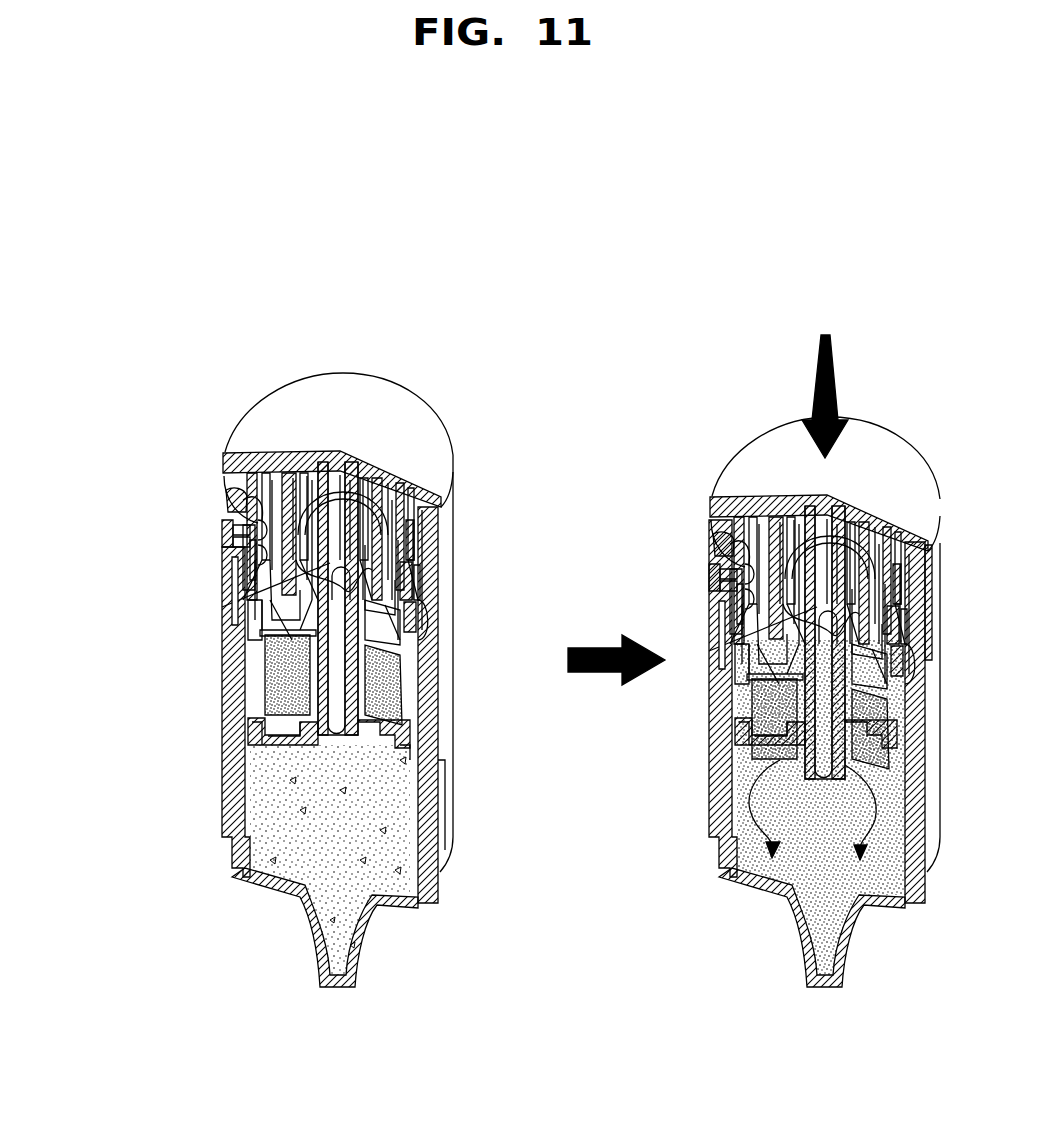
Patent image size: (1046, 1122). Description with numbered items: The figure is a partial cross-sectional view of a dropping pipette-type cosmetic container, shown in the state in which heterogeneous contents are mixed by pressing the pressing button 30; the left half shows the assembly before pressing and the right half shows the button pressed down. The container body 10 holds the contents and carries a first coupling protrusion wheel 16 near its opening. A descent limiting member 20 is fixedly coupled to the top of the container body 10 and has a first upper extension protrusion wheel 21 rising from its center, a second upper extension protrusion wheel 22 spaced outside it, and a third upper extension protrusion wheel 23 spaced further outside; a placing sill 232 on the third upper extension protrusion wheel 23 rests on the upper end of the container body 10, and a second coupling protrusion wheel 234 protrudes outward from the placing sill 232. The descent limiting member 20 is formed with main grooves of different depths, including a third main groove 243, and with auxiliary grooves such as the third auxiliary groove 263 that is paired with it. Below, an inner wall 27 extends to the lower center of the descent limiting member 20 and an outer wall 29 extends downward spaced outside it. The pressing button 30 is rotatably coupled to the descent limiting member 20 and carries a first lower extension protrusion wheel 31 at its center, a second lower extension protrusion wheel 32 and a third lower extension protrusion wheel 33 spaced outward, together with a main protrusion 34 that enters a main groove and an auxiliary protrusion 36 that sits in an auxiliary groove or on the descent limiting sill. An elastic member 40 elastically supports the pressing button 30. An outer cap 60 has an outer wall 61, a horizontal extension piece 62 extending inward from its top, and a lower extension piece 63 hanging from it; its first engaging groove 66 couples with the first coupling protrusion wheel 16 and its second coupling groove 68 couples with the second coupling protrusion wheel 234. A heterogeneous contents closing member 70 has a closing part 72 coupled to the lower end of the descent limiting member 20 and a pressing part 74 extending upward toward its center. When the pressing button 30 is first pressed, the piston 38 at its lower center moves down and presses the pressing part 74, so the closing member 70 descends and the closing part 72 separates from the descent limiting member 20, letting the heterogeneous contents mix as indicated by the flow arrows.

The container body 10 is at (218, 815).
The first coupling protrusion wheel 16 is at (420, 650).
The descent limiting member 20 is at (240, 600).
The first upper extension protrusion wheel 21 is at (390, 700).
The second upper extension protrusion wheel 22 is at (395, 665).
The third upper extension protrusion wheel 23 is at (410, 660).
The inner wall 27 is at (440, 800).
The outer wall 29 is at (425, 720).
The pressing button 30 is at (285, 385).
The first lower extension protrusion wheel 31 is at (347, 478).
The second lower extension protrusion wheel 32 is at (400, 462).
The third lower extension protrusion wheel 33 is at (440, 478).
The main protrusion 34 is at (405, 470).
The auxiliary protrusion 36 is at (252, 480).
The piston 38 is at (236, 640).
The elastic member 40 is at (245, 560).
The outer cap 60 is at (112, 505).
The outer wall 61 is at (228, 560).
The horizontal extension piece 62 is at (225, 502).
The lower extension piece 63 is at (225, 528).
The first engaging groove 66 is at (436, 622).
The second coupling groove 68 is at (432, 578).
The heterogeneous contents closing member 70 is at (260, 782).
The closing part 72 is at (262, 770).
The pressing part 74 is at (260, 707).
The placing sill 232 is at (432, 598).
The second coupling protrusion wheel 234 is at (430, 558).
The third main groove 243 is at (412, 522).
The third auxiliary groove 263 is at (240, 495).